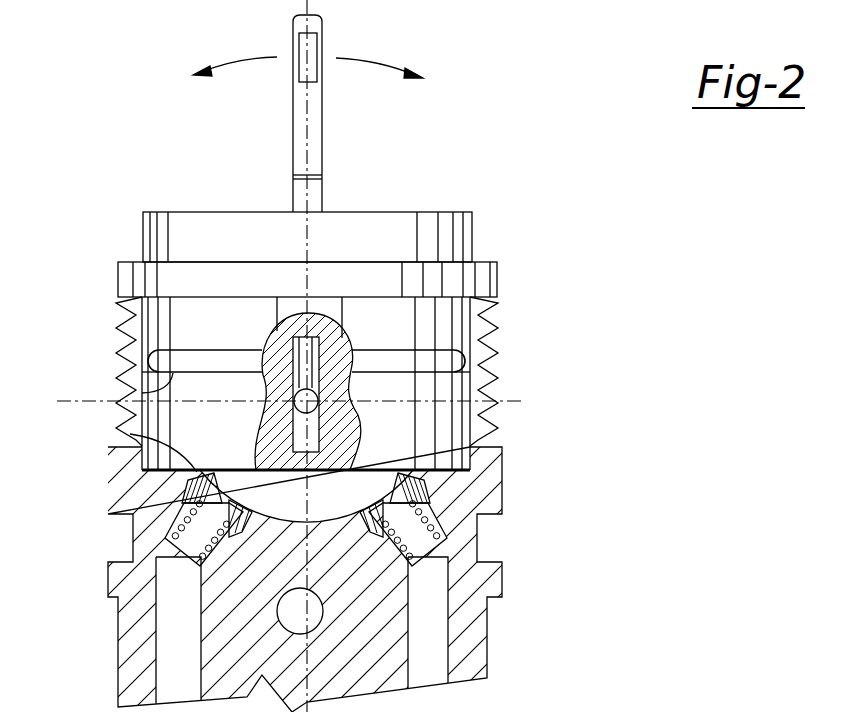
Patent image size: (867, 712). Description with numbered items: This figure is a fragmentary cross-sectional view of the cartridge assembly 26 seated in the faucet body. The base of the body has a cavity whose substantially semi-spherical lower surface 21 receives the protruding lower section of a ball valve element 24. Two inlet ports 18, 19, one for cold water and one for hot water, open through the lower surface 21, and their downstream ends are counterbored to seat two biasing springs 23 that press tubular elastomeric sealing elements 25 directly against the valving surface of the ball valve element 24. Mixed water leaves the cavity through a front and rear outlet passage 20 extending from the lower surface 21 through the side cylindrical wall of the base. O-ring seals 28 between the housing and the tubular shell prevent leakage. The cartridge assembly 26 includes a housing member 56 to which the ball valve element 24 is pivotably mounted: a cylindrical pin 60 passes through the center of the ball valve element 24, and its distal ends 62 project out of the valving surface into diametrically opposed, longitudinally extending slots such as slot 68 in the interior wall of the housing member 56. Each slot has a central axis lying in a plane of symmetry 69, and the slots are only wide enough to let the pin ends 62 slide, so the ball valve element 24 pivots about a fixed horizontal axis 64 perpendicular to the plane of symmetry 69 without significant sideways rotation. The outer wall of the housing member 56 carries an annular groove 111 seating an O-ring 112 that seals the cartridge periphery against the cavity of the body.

The inlet port 18 is at (455, 556).
The inlet port 19 is at (189, 652).
The front and rear outlet passage 20 is at (312, 629).
The semi-spherical lower surface 21 is at (297, 543).
The biasing springs 23 is at (190, 560).
The ball valve element 24 is at (243, 487).
The tubular elastomeric sealing elements 25 is at (130, 434).
The cartridge assembly 26 is at (512, 285).
The O-ring seals 28 is at (282, 0).
The cartridge housing member 56 is at (346, 341).
The cylindrical pin 60 is at (320, 404).
The distal ends 62 is at (362, 382).
The fixed horizontal axis 64 is at (516, 402).
The longitudinally extending slot 68 is at (300, 333).
The plane of symmetry 69 is at (310, 128).
The annular groove 111 is at (148, 358).
The O-ring 112 is at (143, 390).